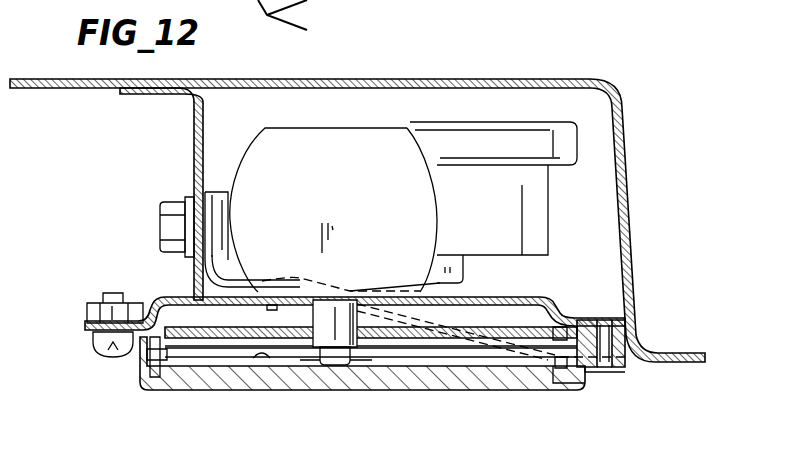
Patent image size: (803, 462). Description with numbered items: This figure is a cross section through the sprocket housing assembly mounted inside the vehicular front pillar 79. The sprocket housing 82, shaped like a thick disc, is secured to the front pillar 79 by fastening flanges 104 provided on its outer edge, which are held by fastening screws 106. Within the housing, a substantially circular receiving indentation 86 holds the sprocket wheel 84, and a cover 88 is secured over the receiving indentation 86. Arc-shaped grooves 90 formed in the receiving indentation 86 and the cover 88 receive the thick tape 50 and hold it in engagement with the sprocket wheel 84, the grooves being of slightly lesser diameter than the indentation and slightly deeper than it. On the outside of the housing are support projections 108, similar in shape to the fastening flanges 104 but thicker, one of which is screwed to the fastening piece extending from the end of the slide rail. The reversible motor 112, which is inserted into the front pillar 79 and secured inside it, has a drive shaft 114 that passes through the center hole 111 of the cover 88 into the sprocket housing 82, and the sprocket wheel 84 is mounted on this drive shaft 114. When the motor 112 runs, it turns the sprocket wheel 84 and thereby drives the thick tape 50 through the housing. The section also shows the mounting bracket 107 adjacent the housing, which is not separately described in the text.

The front pillar 79 is at (632, 228).
The sprocket housing 82 is at (430, 390).
The sprocket wheel 84 is at (213, 350).
The receiving indentation 86 is at (260, 358).
The cover 88 is at (500, 327).
The arc-shaped grooves 90 is at (575, 370).
The thick tape 50 is at (145, 365).
The fastening flanges 104 is at (87, 333).
The fastening screws 106 is at (100, 350).
The mounting bracket 107 is at (168, 300).
The support projections 108 is at (635, 345).
The center hole 111 is at (353, 333).
The reversible motor 112 is at (352, 128).
The drive shaft 114 is at (310, 315).